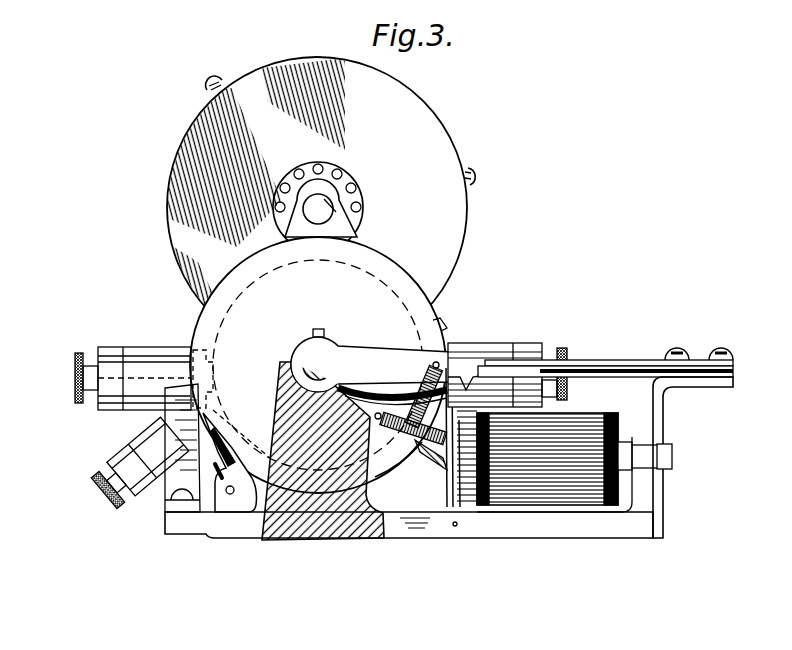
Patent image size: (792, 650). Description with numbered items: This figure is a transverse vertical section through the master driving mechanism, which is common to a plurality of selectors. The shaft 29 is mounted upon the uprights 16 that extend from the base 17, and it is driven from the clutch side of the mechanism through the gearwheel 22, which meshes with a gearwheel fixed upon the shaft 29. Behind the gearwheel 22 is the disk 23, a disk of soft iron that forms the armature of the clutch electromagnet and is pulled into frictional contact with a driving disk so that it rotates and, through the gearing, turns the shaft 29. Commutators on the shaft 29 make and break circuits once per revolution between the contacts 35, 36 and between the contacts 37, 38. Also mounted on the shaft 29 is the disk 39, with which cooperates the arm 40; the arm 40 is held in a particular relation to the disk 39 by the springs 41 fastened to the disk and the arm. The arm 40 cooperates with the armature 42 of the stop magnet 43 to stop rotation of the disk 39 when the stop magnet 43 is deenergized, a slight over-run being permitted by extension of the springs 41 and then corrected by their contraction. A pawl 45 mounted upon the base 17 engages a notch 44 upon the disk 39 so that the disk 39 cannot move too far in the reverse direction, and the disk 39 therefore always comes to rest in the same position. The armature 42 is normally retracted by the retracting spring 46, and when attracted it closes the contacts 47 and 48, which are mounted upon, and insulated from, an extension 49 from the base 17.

The uprights 16 is at (321, 204).
The base 17 is at (643, 521).
The gearwheel 22 is at (356, 202).
The disk 23 is at (312, 207).
The shaft 29 is at (310, 355).
The contact 35 is at (106, 490).
The contact 36 is at (76, 357).
The contact 37 is at (562, 351).
The contact 38 is at (424, 453).
The disk 39 is at (387, 262).
The arm 40 is at (373, 363).
The springs 41 is at (420, 393).
The armature 42 is at (441, 440).
The stop magnet 43 is at (528, 503).
The notch 44 is at (205, 416).
The pawl 45 is at (228, 474).
The retracting spring 46 is at (411, 420).
The contact 47 is at (613, 373).
The contact 48 is at (597, 363).
The extension 49 is at (658, 421).